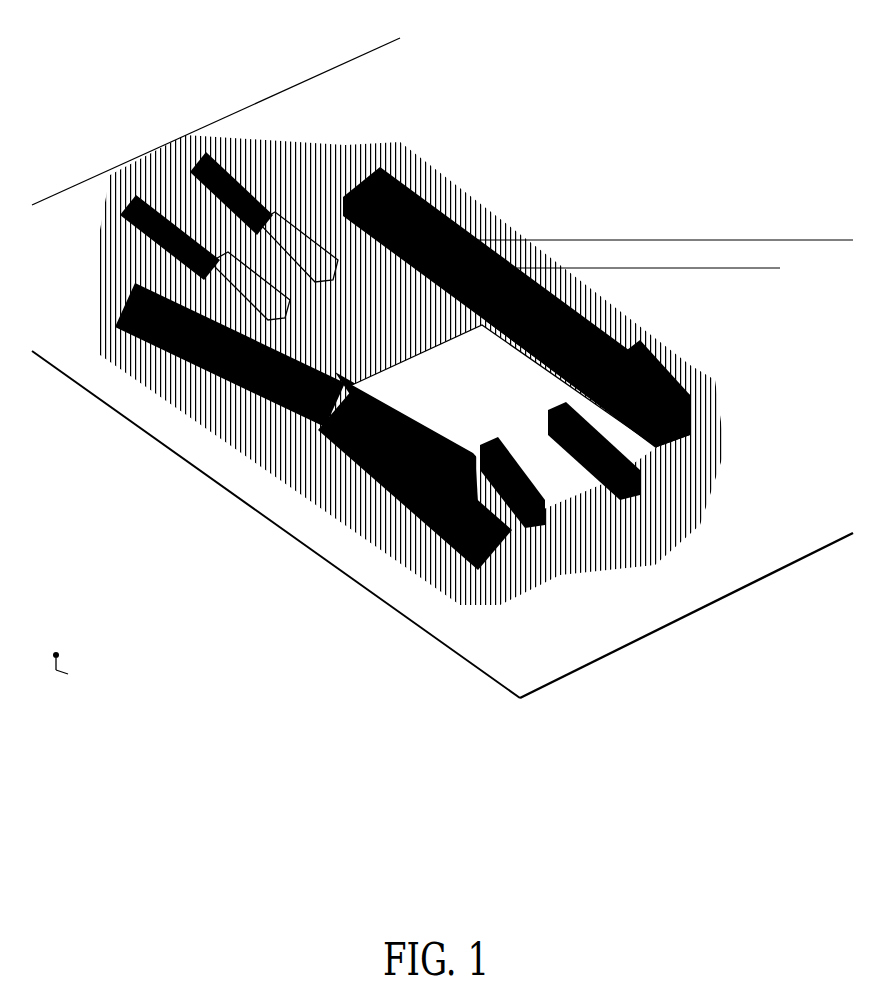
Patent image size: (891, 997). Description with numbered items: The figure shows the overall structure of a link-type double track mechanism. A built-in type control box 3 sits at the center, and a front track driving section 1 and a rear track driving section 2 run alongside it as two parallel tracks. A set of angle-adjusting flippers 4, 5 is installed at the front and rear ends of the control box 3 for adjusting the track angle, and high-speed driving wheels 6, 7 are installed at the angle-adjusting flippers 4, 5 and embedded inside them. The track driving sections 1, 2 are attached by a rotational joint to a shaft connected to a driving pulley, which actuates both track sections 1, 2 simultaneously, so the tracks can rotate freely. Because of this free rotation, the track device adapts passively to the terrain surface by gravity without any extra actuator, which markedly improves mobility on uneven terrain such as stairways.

The front track driving section 1 is at (450, 226).
The rear track driving section 2 is at (598, 345).
The built-in type control box 3 is at (232, 345).
The angle-adjusting flipper 4 is at (262, 235).
The angle-adjusting flipper 5 is at (442, 368).
The high-speed driving wheel 6 is at (337, 240).
The high-speed driving wheel 7 is at (548, 560).